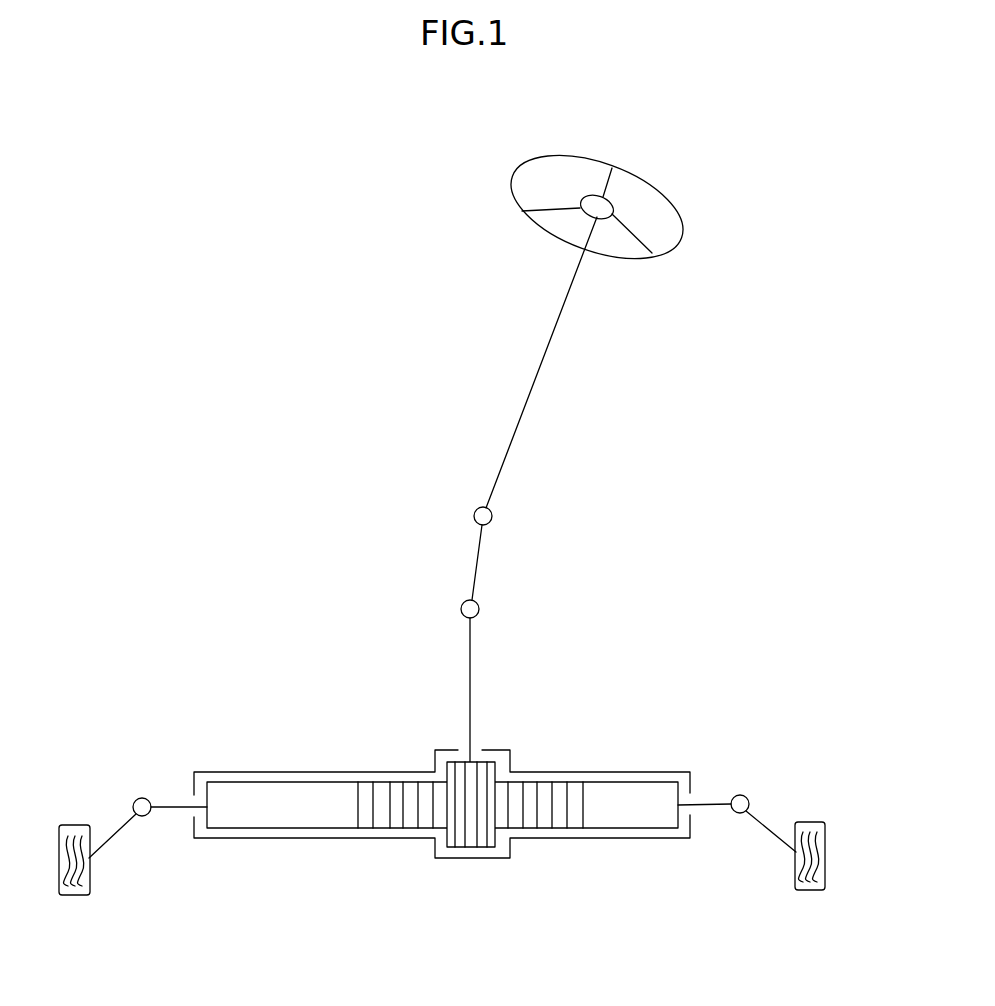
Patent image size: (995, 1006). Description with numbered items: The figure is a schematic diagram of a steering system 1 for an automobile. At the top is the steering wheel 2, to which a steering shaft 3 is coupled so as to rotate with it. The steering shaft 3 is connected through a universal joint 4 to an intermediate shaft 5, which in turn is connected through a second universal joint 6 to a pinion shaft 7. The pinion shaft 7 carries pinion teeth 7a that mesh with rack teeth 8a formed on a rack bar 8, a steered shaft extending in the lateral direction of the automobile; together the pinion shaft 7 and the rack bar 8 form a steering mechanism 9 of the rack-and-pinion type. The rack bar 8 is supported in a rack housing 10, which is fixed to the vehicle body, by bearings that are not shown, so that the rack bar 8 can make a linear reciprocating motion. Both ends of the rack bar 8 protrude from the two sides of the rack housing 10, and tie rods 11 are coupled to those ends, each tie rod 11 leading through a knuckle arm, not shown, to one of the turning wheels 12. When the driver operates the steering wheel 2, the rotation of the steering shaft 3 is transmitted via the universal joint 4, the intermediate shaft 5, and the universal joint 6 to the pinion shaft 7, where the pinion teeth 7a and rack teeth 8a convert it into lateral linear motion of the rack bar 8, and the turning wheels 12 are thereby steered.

The steering system 1 is at (703, 155).
The steering wheel 2 is at (588, 156).
The steering shaft 3 is at (542, 362).
The universal joint 4 is at (492, 514).
The intermediate shaft 5 is at (477, 563).
The universal joint 6 is at (480, 608).
The pinion shaft 7 is at (478, 712).
The pinion teeth 7a is at (482, 842).
The rack bar 8 is at (547, 832).
The rack teeth 8a is at (413, 820).
The steering mechanism 9 is at (515, 862).
The rack housing 10 is at (345, 770).
The tie rod 11 is at (122, 830).
The turning wheel 12 is at (73, 895).